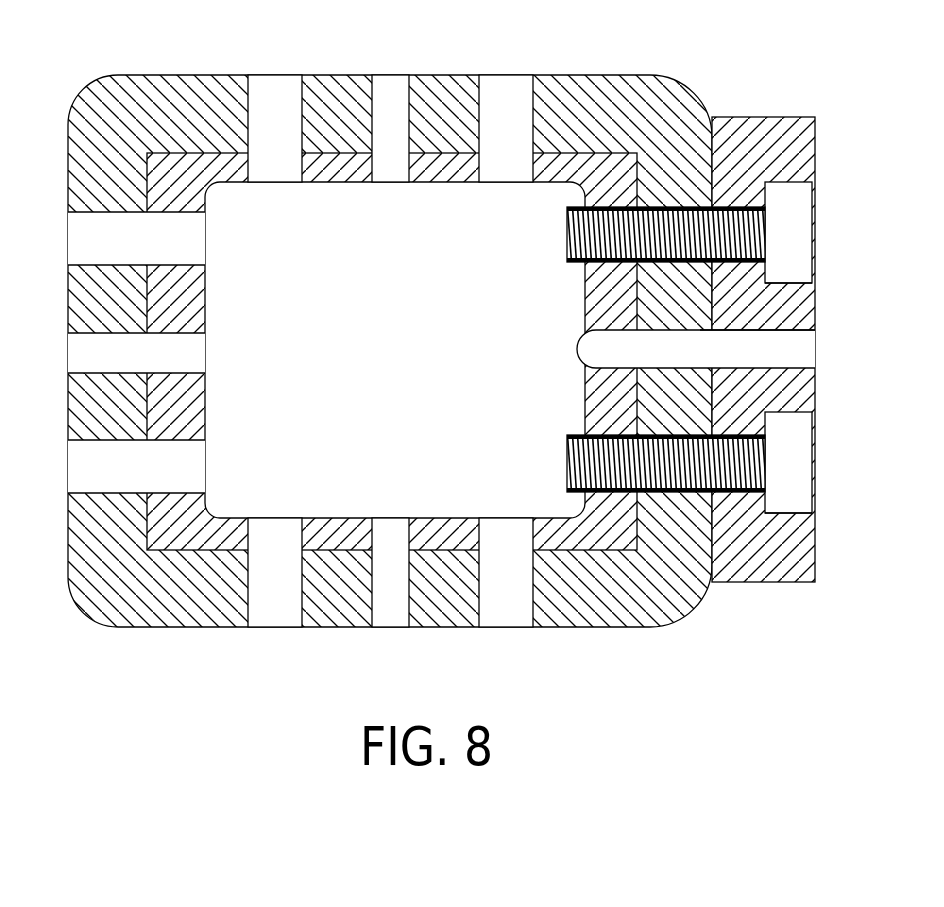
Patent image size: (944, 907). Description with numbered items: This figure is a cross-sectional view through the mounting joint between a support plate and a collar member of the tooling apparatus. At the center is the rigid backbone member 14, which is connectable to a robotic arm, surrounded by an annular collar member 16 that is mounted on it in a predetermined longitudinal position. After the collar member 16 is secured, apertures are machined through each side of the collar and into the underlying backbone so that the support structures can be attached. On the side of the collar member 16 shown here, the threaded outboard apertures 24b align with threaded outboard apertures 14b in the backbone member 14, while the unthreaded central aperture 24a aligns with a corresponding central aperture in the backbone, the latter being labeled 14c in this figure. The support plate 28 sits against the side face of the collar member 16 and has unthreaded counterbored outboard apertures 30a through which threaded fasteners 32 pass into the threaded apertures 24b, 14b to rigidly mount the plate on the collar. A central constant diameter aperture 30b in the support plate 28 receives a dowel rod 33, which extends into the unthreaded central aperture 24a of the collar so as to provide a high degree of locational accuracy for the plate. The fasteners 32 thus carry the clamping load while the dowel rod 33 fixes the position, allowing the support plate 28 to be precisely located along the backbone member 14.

The backbone member 14 is at (418, 492).
The outboard apertures in backbone member 14b is at (203, 214).
The central bore portion in inner block 14c is at (183, 372).
The collar member 16 is at (716, 62).
The central apertures 24a is at (90, 372).
The outboard apertures 24b is at (69, 214).
The support plate 28 is at (836, 105).
The outboard counterbore apertures 30a is at (788, 283).
The central constant diameter apertures 30b is at (790, 332).
The threaded fasteners 32 is at (832, 218).
The dowel rods 33 is at (800, 347).